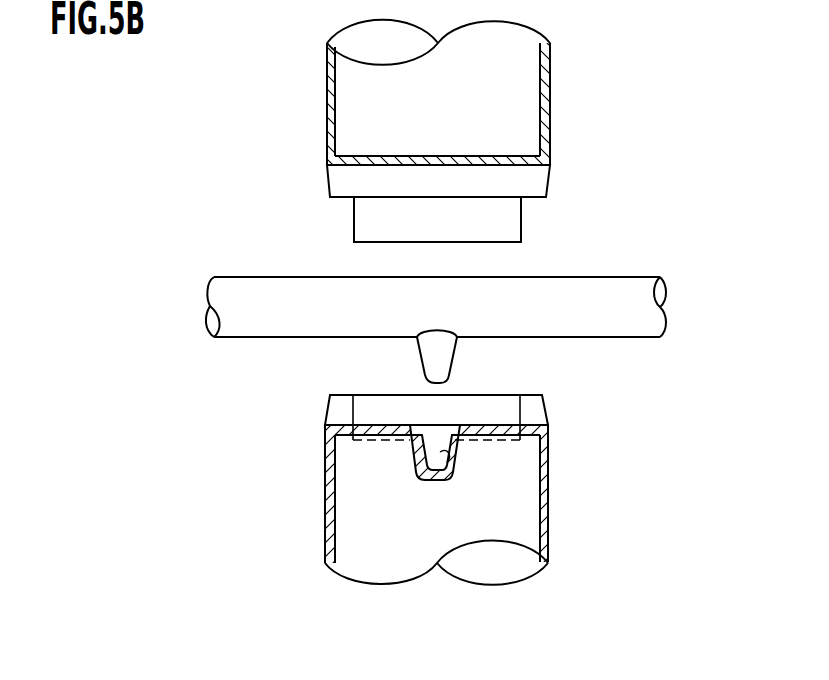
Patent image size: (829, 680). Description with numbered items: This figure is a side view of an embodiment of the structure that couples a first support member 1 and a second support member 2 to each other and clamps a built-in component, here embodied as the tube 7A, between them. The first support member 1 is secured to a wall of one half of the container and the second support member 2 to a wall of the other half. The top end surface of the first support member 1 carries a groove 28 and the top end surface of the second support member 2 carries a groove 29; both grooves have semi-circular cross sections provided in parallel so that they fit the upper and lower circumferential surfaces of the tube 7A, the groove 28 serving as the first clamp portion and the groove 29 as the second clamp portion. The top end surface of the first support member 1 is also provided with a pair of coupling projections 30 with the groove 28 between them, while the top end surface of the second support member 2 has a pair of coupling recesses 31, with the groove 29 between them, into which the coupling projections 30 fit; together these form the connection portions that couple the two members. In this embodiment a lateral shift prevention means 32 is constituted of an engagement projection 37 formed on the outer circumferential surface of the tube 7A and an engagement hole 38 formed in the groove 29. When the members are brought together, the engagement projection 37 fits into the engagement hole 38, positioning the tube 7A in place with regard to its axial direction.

The first support member 1 is at (582, 105).
The groove 28 is at (533, 183).
The coupling projection 30 is at (513, 227).
The tube 7A is at (643, 283).
The engagement projection 37 is at (443, 362).
The lateral shift prevention means 32 is at (368, 369).
The second support member 2 is at (580, 523).
The groove 29 is at (535, 415).
The engagement hole 38 is at (452, 466).
The coupling recess 31 is at (408, 440).